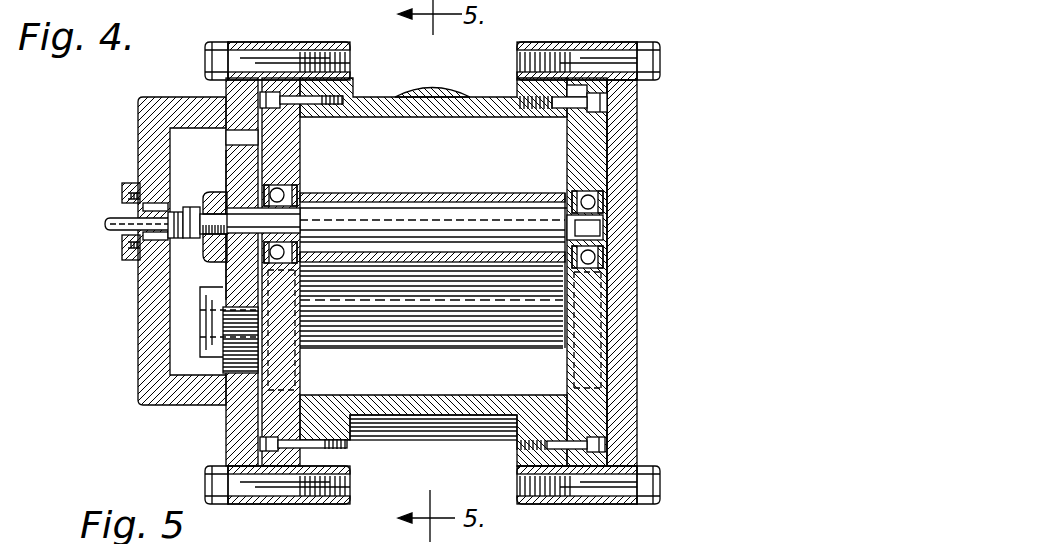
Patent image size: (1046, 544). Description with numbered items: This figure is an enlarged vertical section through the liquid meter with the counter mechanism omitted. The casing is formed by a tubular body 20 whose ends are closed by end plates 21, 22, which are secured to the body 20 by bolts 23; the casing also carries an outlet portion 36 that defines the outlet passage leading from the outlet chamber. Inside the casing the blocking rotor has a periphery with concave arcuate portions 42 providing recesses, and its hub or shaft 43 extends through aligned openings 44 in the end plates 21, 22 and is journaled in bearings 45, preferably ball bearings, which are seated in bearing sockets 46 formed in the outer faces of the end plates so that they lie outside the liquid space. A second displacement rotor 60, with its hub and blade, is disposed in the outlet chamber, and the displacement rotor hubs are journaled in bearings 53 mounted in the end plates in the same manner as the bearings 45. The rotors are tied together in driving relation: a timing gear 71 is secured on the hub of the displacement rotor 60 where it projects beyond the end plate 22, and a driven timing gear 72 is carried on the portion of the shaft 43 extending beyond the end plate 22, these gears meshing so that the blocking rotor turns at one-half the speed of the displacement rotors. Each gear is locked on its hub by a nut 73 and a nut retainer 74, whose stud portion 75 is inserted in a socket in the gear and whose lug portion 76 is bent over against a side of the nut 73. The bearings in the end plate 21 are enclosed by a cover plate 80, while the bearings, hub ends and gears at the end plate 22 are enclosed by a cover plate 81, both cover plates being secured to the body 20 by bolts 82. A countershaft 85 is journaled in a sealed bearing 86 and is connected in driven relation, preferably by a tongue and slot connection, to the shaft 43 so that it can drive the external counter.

The tubular body 20 is at (466, 430).
The end plate 21 is at (590, 143).
The end plate 22 is at (283, 142).
The bolts 23 is at (352, 97).
The outlet portion 36 is at (446, 93).
The concave arcuate portions 42 is at (464, 205).
The hub or shaft 43 is at (404, 217).
The aligned openings 44 is at (352, 195).
The bearings 45 is at (250, 180).
The bearing sockets 46 is at (230, 268).
The bearings 53 is at (226, 406).
The second displacement rotor 60 is at (450, 349).
The timing gear 71 is at (222, 366).
The driven timing gear 72 is at (243, 135).
The nut 73 is at (207, 200).
The nut retainer 74 is at (215, 197).
The stud portion 75 is at (235, 187).
The lug portion 76 is at (222, 264).
The cover plate 80 is at (627, 312).
The cover plate 81 is at (160, 97).
The bolts 82 is at (650, 70).
The countershaft 85 is at (120, 225).
The sealed bearing 86 is at (125, 236).